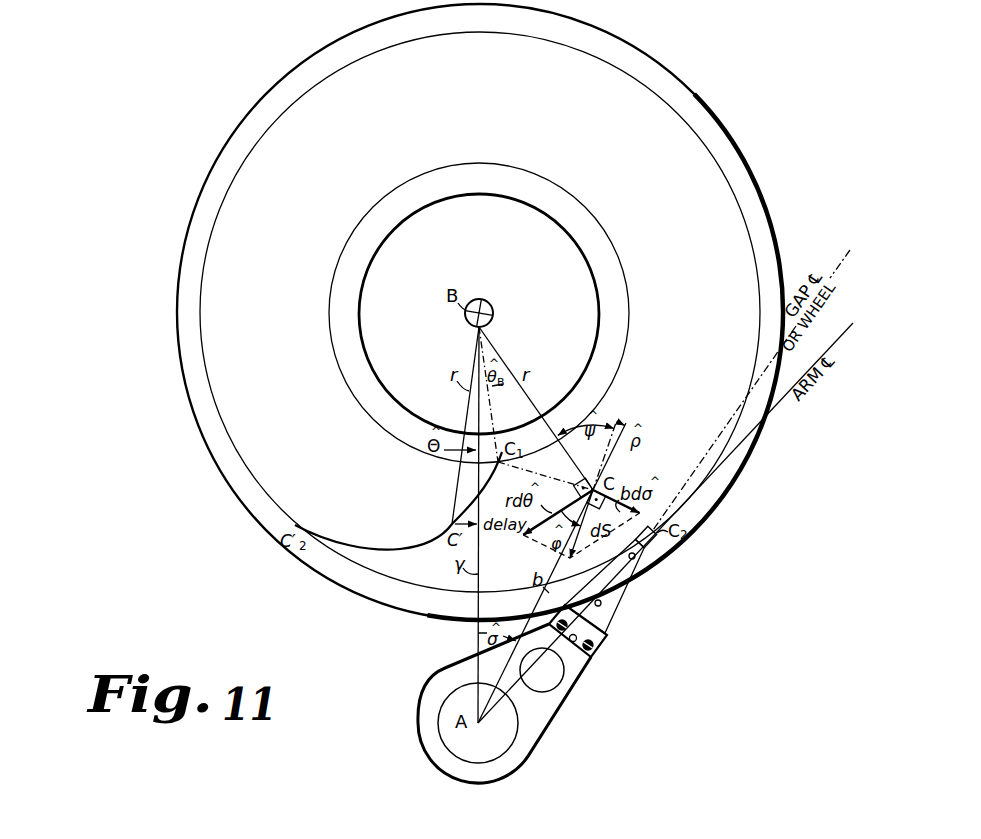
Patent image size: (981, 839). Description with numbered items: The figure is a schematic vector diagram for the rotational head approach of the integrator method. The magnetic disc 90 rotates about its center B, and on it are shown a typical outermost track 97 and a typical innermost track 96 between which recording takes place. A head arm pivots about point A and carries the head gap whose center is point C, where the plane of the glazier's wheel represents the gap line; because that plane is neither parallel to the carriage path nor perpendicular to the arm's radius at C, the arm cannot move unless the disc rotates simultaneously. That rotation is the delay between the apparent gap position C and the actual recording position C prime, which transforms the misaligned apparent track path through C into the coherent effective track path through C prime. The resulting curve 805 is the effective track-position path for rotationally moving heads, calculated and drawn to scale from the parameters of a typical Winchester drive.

The magnetic disc 90 is at (750, 176).
The innermost track 96 is at (621, 264).
The outermost track 97 is at (691, 126).
The curve 805 is at (410, 547).